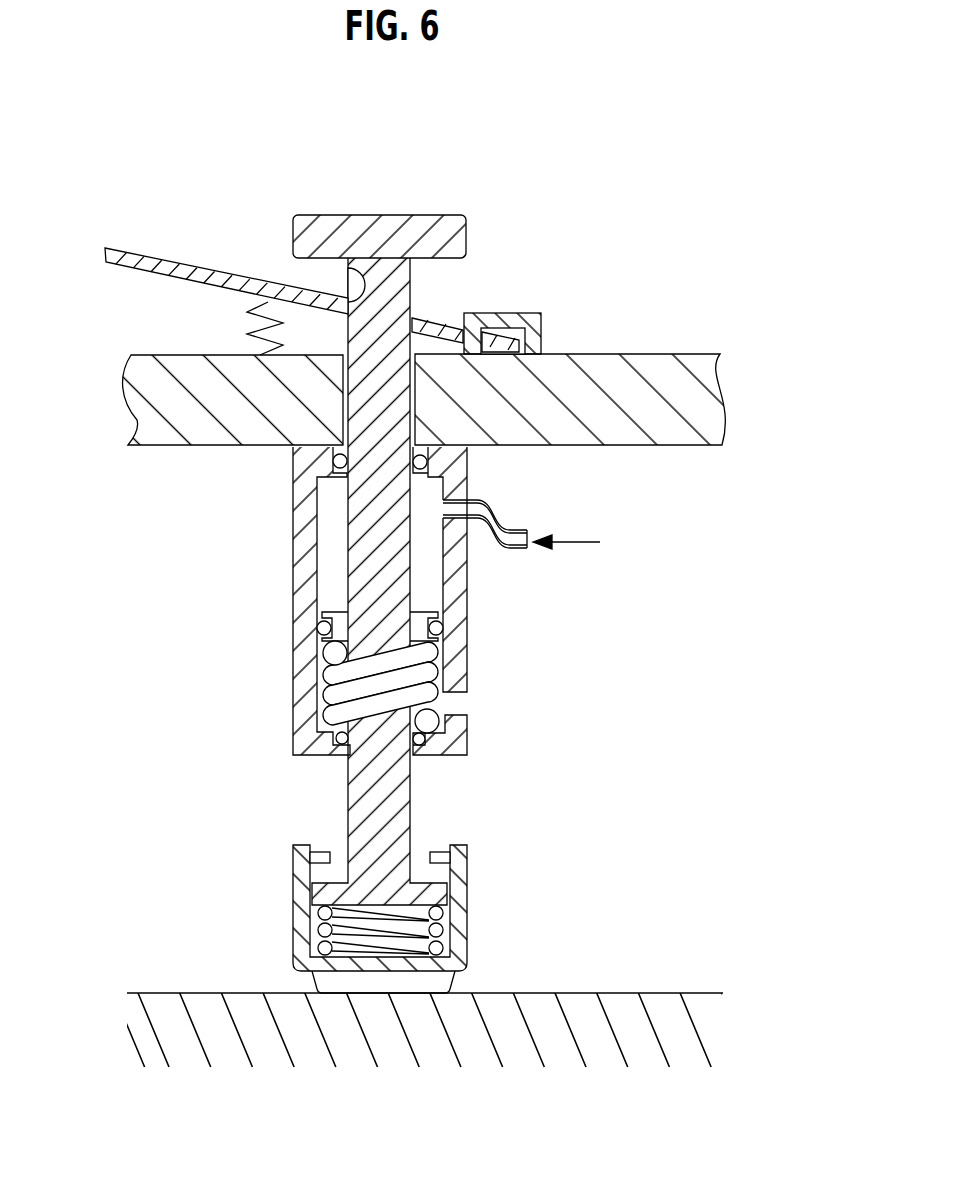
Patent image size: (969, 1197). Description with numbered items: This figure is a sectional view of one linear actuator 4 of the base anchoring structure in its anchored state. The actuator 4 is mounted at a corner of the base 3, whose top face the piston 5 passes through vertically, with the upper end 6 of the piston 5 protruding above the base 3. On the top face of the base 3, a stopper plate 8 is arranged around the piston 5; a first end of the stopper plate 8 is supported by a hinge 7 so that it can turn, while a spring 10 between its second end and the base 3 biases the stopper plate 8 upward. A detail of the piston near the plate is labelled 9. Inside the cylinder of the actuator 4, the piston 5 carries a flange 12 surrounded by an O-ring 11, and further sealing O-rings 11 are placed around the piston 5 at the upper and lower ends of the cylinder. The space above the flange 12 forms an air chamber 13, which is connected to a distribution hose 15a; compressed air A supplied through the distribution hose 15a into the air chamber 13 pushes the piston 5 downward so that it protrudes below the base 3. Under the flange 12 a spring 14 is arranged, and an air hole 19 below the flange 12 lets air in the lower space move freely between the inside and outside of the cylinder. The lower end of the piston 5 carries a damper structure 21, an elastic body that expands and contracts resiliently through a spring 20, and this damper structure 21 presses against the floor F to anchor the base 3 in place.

The base 3 is at (137, 355).
The linear actuator 4 is at (292, 532).
The piston 5 is at (413, 302).
The upper end 6 is at (388, 214).
The hinge 7 is at (503, 312).
The stopper plate 8 is at (162, 258).
The detent recess 9 is at (347, 267).
The spring 10 is at (270, 307).
The sealing O-ring 11 is at (333, 459).
The flange 12 is at (335, 612).
The air chamber 13 is at (428, 498).
The spring 14 is at (333, 678).
The distribution hose 15a is at (493, 552).
The air hole 19 is at (457, 695).
The spring 20 is at (325, 915).
The damper structure 21 is at (467, 888).
The compressed air A is at (577, 547).
The floor F is at (621, 993).